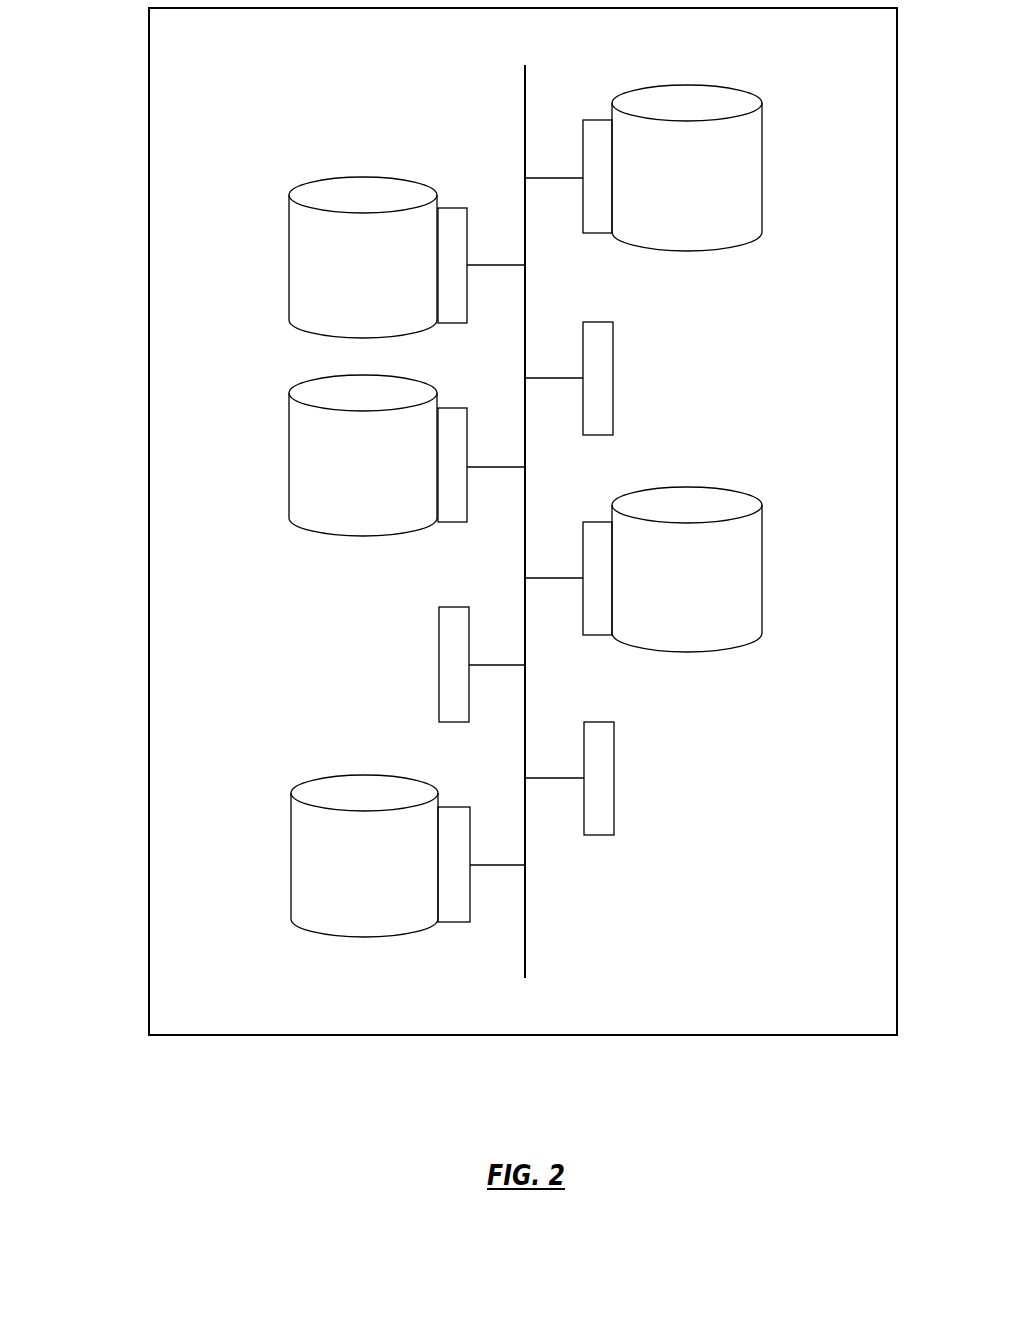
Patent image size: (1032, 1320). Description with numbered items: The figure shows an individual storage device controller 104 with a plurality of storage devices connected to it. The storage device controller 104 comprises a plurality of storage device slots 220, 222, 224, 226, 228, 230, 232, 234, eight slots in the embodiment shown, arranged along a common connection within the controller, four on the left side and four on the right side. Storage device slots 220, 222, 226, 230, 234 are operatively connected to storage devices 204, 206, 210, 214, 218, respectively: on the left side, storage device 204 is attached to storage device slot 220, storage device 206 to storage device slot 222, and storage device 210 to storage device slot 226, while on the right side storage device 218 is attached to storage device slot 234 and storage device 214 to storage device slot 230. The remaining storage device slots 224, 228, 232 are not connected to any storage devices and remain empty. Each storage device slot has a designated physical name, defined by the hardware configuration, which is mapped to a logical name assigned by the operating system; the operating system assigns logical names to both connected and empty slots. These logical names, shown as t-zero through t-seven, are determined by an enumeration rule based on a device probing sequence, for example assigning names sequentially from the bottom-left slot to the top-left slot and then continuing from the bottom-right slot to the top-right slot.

The individual storage device controller 104 is at (149, 38).
The storage device 204 is at (289, 265).
The storage device 206 is at (289, 467).
The storage device 210 is at (291, 865).
The storage device 214 is at (762, 578).
The storage device 218 is at (762, 178).
The storage device slot 220 is at (455, 220).
The storage device slot 222 is at (456, 421).
The storage device slot 224 is at (457, 618).
The storage device slot 226 is at (456, 824).
The storage device slot 228 is at (596, 744).
The storage device slot 230 is at (594, 539).
The storage device slot 232 is at (594, 344).
The storage device slot 234 is at (594, 139).